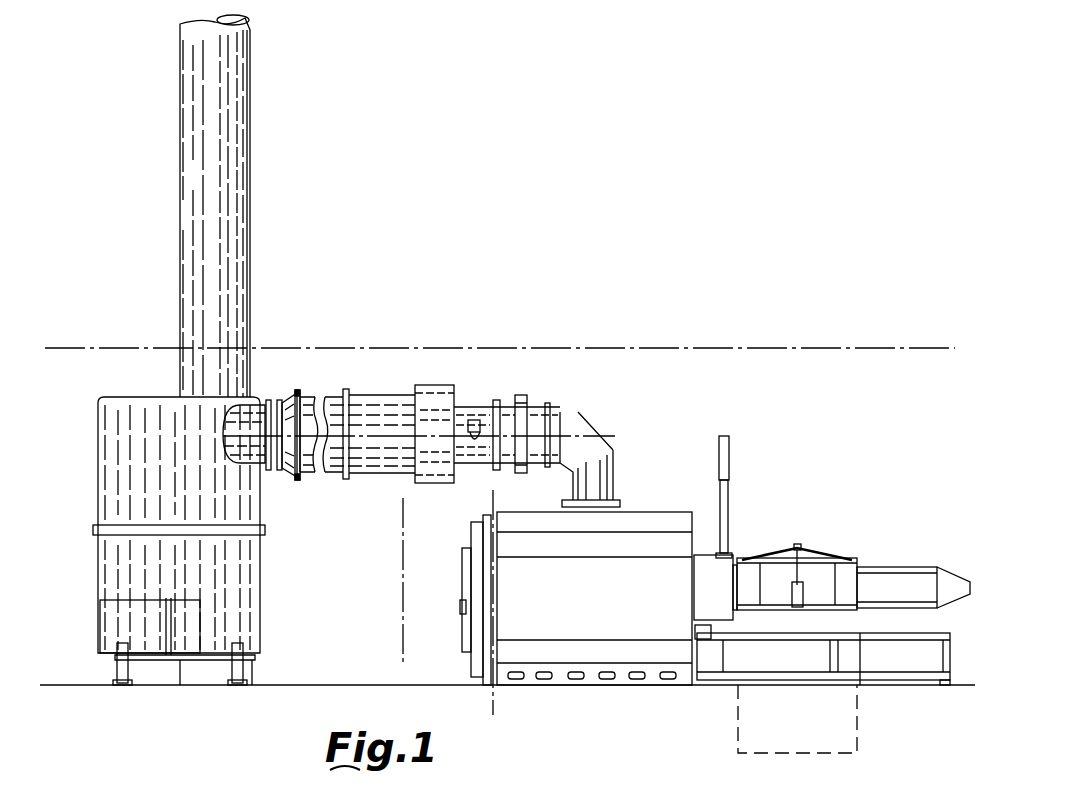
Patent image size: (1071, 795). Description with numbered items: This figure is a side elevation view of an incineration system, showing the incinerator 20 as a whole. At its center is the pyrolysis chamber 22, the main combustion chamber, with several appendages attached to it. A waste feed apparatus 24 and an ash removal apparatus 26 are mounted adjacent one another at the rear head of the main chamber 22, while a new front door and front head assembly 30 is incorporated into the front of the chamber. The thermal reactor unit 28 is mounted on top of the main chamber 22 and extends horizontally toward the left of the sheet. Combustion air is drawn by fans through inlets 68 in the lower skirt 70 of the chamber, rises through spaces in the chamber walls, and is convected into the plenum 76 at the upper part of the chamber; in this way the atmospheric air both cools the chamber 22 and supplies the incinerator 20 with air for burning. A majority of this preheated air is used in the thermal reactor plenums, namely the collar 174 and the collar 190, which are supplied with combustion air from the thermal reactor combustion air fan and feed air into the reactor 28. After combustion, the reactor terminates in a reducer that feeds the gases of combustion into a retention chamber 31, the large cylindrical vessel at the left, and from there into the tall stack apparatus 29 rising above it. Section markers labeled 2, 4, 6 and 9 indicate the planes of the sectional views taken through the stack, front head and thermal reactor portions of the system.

The section line 2- 2 is at (58, 298).
The section line 4- 4 is at (490, 495).
The section line 6- 6 is at (400, 511).
The blower/fan assembly 9 is at (260, 428).
The incinerator 20 is at (604, 586).
The pyrolysis chamber 22 is at (604, 600).
The waste feed apparatus 24 is at (832, 548).
The ash removal apparatus 26 is at (917, 688).
The thermal reactor unit 28 is at (361, 395).
The stack apparatus 29 is at (258, 202).
The front door and front head assembly 30 is at (460, 630).
The retention chamber 31 is at (100, 462).
The inlets 68 is at (592, 699).
The lower skirt 70 is at (530, 650).
The plenum 76 is at (672, 520).
The collar 174 is at (522, 398).
The collar 190 is at (440, 392).